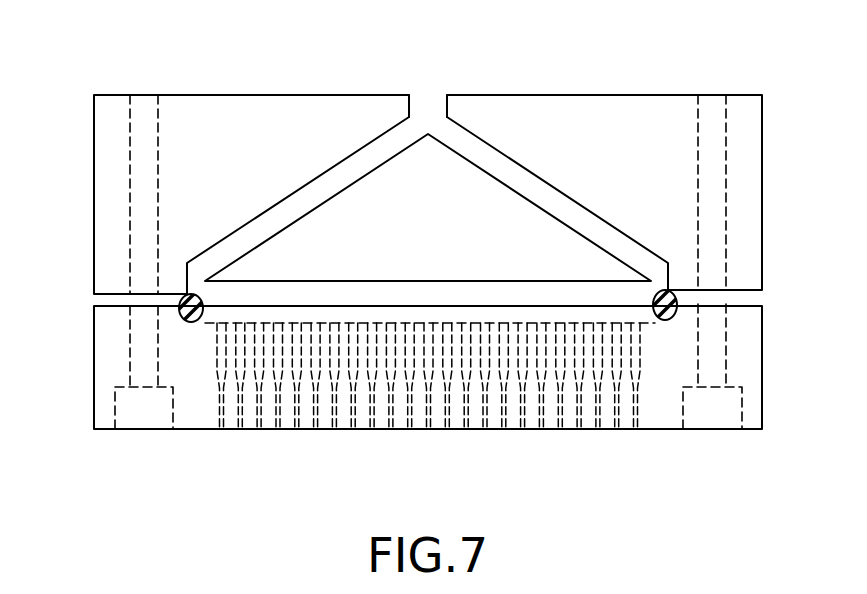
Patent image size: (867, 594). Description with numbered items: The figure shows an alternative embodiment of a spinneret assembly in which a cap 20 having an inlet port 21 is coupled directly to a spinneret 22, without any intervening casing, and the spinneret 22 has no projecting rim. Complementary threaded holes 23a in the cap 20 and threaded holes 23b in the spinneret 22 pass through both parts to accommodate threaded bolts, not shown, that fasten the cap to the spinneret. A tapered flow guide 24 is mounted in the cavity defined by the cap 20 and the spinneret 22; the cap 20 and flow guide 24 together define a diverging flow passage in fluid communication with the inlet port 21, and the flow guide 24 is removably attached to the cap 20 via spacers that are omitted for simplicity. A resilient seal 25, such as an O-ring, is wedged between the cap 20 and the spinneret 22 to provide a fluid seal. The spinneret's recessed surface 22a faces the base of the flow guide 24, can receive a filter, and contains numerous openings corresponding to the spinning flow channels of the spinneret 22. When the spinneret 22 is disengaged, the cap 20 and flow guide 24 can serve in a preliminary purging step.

The cap 20 is at (742, 178).
The inlet port 21 is at (425, 105).
The spinneret 22 is at (625, 430).
The recessed surface 22a is at (210, 323).
The threaded holes in cap 23a is at (128, 195).
The threaded holes in spinneret 23b is at (128, 353).
The tapered flow guide 24 is at (455, 197).
The resilient seal 25 is at (183, 316).